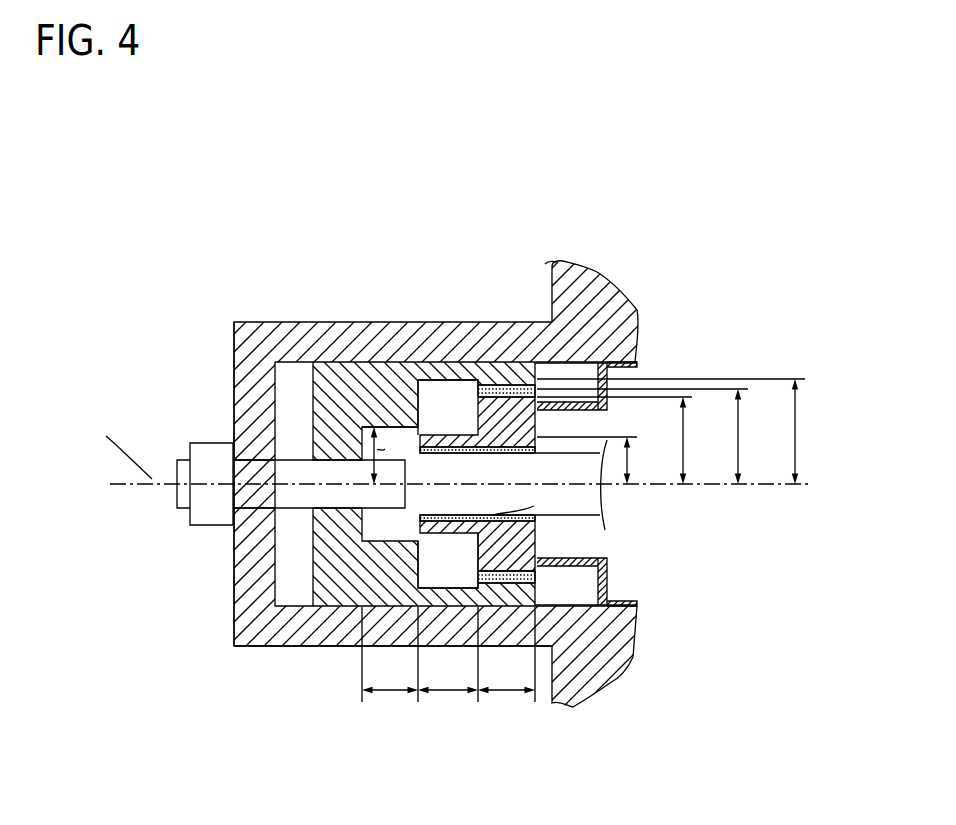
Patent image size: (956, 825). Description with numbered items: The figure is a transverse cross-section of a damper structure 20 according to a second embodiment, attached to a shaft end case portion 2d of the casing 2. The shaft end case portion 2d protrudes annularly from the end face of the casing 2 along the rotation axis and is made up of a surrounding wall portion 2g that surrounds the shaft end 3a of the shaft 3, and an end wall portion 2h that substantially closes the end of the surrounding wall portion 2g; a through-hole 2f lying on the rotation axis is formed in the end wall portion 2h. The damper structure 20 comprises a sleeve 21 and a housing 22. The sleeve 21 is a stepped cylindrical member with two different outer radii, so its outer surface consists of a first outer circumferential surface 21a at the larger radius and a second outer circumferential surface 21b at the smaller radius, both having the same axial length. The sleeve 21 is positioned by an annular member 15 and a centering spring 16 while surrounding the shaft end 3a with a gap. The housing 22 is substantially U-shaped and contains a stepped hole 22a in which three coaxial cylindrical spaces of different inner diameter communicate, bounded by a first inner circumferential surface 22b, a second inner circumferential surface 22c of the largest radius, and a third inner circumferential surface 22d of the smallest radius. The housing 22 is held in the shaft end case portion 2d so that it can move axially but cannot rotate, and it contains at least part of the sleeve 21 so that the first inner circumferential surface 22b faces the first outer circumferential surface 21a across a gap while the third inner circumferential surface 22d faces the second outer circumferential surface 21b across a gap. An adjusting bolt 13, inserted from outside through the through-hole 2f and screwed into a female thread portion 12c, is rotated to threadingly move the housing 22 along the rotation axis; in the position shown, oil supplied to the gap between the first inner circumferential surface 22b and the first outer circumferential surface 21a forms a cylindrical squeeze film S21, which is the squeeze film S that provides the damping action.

The damper structure 20 is at (187, 276).
The casing 2 is at (478, 532).
The shaft end case portion 2d is at (305, 650).
The through-hole 2f is at (252, 507).
The surrounding wall portion 2g is at (283, 623).
The end wall portion 2h is at (242, 590).
The shaft 3 is at (478, 485).
The shaft end 3a is at (585, 500).
The female thread portion 12c is at (327, 457).
The adjusting bolt 13 is at (220, 455).
The annular member 15 is at (607, 373).
The centering spring 16 is at (573, 410).
The sleeve 21 is at (546, 531).
The first outer circumferential surface 21a is at (505, 572).
The second outer circumferential surface 21b is at (446, 537).
The housing 22 is at (337, 611).
The stepped hole 22a is at (438, 398).
The first inner circumferential surface 22b is at (479, 402).
The second inner circumferential surface 22c is at (458, 386).
The third inner circumferential surface 22d is at (397, 428).
The squeeze film S21 is at (534, 581).
The squeeze film S is at (570, 663).